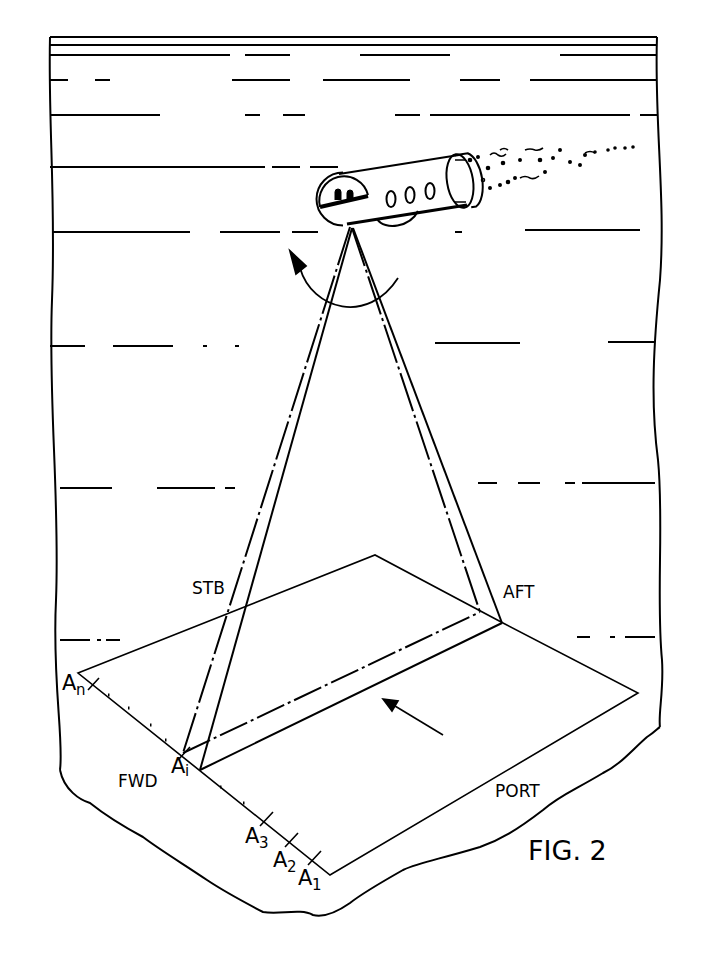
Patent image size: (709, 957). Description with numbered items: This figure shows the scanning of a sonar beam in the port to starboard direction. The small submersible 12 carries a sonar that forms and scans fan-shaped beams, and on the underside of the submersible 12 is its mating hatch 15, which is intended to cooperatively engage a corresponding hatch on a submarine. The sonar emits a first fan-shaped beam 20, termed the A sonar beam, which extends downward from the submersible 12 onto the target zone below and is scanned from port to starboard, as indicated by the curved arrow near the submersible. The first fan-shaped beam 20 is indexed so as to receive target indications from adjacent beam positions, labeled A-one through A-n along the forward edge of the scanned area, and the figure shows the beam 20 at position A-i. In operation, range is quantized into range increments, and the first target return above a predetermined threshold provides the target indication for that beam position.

The small submersible 12 is at (378, 172).
The mating hatch 15 is at (392, 226).
The first fan-shaped beam 20 is at (418, 405).